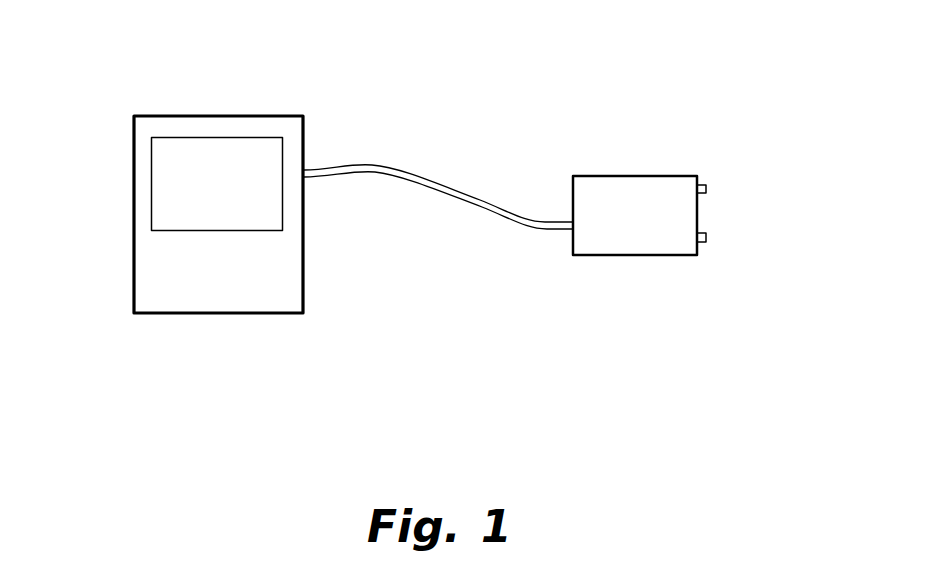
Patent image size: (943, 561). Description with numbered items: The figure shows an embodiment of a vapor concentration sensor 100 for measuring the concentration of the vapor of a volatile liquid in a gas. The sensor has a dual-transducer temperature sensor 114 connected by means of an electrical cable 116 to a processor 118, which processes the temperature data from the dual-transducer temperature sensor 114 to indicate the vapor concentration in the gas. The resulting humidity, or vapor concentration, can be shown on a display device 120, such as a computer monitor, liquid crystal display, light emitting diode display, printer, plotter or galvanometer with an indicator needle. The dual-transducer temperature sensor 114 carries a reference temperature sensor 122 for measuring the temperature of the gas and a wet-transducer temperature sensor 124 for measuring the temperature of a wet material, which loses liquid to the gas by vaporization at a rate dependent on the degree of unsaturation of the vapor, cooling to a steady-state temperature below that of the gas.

The vapor concentration sensor 100 is at (652, 62).
The dual-transducer temperature sensor 114 is at (665, 176).
The electrical cable 116 is at (430, 177).
The processor 118 is at (133, 249).
The display device 120 is at (171, 138).
The reference temperature sensor 122 is at (706, 187).
The wet-transducer temperature sensor 124 is at (706, 238).